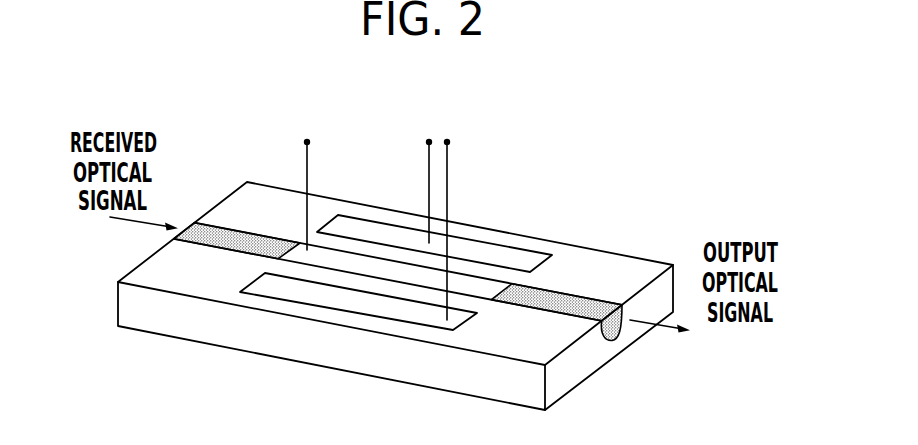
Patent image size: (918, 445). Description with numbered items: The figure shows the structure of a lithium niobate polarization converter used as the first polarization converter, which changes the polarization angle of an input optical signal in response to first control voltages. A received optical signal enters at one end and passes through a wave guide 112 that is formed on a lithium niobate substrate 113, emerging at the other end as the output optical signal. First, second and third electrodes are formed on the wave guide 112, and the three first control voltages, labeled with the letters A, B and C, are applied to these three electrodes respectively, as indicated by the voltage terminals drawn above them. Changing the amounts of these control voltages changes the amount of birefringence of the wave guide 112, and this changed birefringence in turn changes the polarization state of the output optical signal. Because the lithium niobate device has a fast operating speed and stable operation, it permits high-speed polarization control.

The wave guide 112 is at (569, 290).
The lithium niobate substrate 113 is at (168, 273).